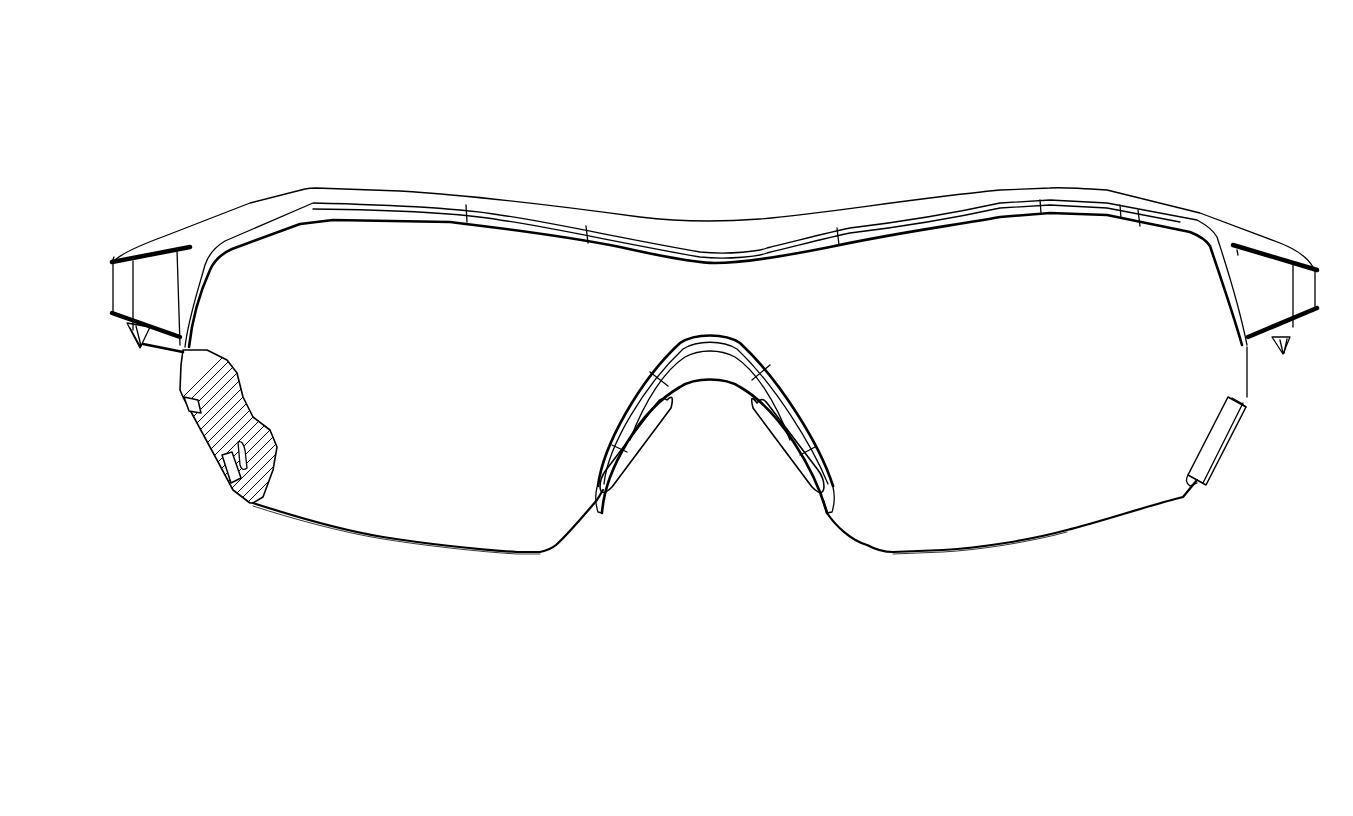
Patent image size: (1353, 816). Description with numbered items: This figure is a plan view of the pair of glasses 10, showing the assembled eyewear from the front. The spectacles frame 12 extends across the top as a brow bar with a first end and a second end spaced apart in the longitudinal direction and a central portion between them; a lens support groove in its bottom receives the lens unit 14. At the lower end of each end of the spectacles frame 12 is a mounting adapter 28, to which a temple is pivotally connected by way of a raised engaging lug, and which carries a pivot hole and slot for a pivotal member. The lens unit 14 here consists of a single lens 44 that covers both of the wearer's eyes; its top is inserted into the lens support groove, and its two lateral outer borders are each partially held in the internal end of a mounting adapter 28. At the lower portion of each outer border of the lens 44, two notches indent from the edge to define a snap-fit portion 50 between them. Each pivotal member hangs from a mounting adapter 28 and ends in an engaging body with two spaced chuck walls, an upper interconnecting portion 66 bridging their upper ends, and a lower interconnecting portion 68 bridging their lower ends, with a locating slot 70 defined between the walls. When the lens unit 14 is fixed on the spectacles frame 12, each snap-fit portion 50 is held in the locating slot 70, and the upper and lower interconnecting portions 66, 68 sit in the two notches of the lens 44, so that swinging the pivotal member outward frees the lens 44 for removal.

The pair of glasses 10 is at (258, 92).
The spectacles frame 12 is at (715, 236).
The lens unit 14 is at (940, 582).
The mounting adapter 28 is at (1270, 276).
The lens 44 is at (466, 527).
The snap-fit portion 50 is at (210, 440).
The upper interconnecting portion 66 is at (187, 407).
The lower interconnecting portion 68 is at (225, 477).
The locating slot 70 is at (243, 443).